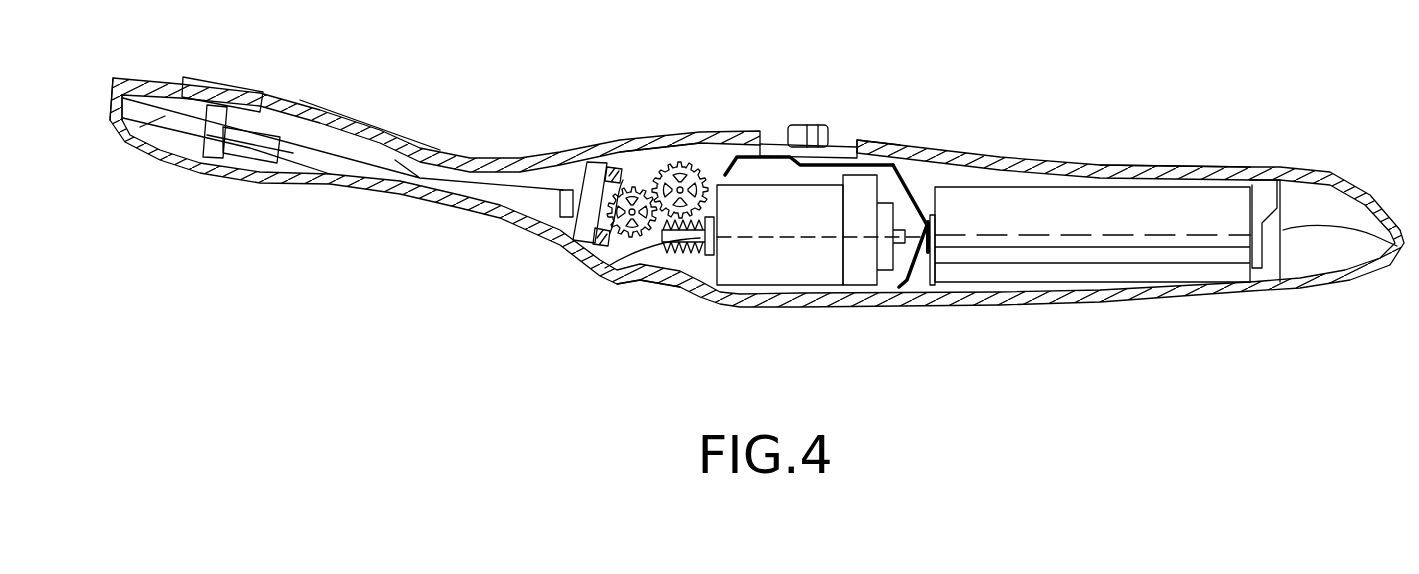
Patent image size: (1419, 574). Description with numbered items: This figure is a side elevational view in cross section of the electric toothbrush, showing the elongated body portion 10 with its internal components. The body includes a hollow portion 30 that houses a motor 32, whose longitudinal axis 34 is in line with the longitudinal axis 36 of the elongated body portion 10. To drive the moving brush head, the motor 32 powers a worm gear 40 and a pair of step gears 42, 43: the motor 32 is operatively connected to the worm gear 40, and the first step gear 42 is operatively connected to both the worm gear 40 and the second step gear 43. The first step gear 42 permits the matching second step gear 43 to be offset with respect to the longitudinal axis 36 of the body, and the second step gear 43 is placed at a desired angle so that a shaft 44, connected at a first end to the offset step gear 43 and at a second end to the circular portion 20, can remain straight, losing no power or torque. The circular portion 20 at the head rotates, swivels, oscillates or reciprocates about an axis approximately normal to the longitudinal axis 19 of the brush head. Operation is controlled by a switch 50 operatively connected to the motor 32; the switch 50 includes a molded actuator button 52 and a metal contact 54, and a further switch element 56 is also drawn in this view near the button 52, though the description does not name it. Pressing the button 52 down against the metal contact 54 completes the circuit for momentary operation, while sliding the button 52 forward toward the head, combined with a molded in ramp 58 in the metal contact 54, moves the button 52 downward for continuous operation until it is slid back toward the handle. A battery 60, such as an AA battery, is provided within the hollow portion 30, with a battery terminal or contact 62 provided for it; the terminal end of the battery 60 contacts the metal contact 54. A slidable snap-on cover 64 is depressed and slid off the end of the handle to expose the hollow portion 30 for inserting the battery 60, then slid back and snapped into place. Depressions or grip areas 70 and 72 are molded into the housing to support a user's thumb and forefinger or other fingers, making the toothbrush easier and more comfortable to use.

The elongated body portion 10 is at (1180, 290).
The longitudinal axis 19 is at (118, 119).
The circular portion 20 is at (213, 118).
The shaft 44 is at (353, 163).
The second step gear 43 is at (638, 182).
The first step gear 42 is at (682, 160).
The depression or grip area 72 is at (653, 147).
The worm gear 40 is at (620, 262).
The depression or grip area 70 is at (648, 282).
The motor 32 is at (735, 277).
The longitudinal axis of the motor 34 is at (775, 240).
The hollow portion 30 is at (923, 290).
The battery 60 is at (1060, 270).
The battery terminal or contact 62 is at (1263, 247).
The slidable snap-on cover 64 is at (1303, 203).
The longitudinal axis of the elongated body portion 36 is at (1182, 170).
The molded in ramp 58 is at (790, 160).
The metal contact 54 is at (903, 193).
The switch plate 56 is at (772, 128).
The molded actuator button 52 is at (807, 122).
The switch 50 is at (853, 138).